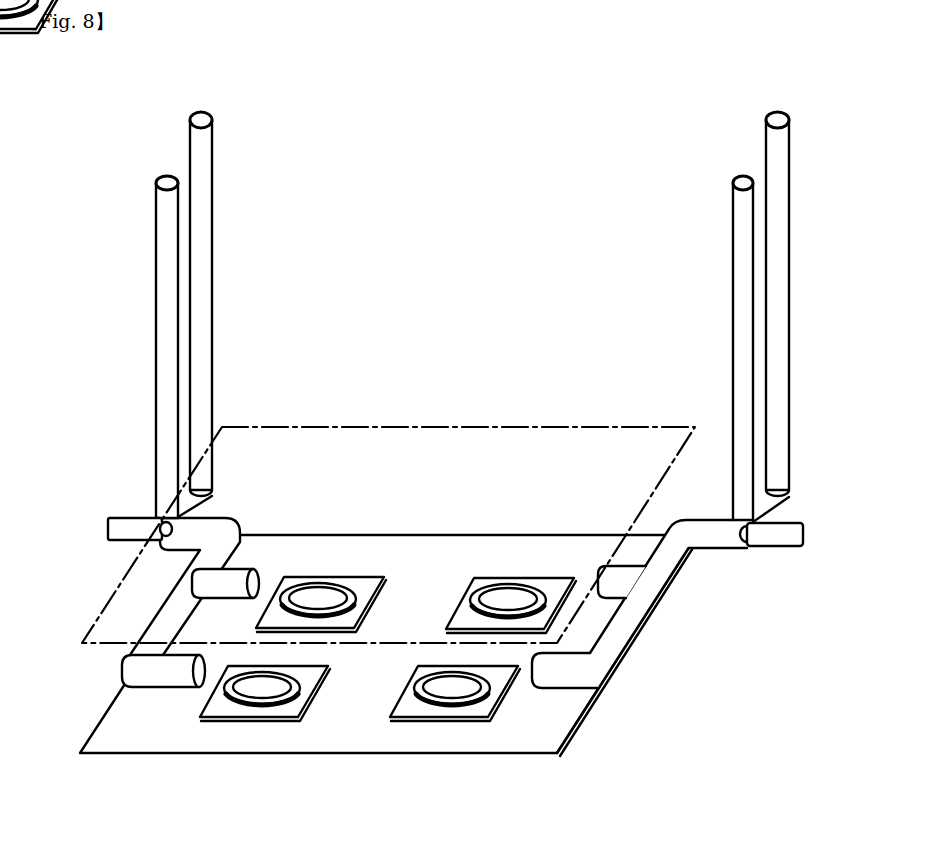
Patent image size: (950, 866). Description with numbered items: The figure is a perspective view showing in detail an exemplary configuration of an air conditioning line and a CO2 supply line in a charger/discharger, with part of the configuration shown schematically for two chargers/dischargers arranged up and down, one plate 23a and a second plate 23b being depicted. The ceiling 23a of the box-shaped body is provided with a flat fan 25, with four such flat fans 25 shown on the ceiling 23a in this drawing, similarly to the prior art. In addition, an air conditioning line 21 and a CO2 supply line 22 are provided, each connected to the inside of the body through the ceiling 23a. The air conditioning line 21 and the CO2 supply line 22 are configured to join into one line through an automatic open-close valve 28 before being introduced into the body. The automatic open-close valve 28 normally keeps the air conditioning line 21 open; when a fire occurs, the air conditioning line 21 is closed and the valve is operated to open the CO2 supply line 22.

The air conditioning line 21 is at (734, 308).
The CO2 supply line 22 is at (782, 267).
The ceiling 23a is at (552, 728).
The upper heat transfer plate 23b is at (394, 426).
The flat fan 25 is at (403, 703).
The automatic open-close valve 28 is at (792, 547).